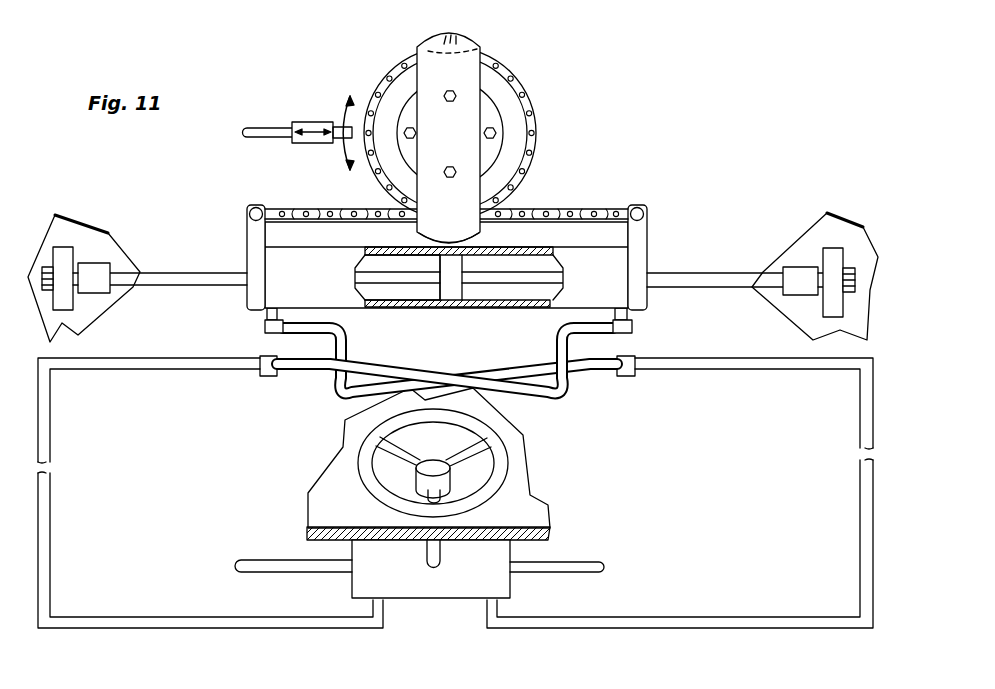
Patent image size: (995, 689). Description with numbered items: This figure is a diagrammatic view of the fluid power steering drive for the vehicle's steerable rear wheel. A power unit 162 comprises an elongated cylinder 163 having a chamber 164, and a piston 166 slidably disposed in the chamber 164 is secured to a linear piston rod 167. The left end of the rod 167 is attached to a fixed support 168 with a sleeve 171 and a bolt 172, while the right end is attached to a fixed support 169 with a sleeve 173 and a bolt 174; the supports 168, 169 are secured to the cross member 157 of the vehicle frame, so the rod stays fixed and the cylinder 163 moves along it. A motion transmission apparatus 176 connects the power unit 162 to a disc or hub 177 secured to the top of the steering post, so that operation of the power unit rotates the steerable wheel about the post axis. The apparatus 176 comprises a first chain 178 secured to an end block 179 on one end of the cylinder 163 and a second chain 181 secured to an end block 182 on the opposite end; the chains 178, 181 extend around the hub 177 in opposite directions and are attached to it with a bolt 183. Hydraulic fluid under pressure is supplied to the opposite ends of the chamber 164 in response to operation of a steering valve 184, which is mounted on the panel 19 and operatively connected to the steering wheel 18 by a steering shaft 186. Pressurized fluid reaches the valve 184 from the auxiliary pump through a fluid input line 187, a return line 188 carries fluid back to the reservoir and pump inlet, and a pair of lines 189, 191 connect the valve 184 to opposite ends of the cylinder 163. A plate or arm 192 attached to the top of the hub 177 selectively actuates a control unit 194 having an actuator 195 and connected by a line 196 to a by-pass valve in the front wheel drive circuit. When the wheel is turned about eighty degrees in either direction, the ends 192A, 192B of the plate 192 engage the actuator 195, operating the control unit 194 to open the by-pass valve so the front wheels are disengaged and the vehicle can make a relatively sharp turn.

The steering wheel 18 is at (500, 462).
The panel 19 is at (522, 505).
The cross member 157 is at (92, 305).
The power unit 162 is at (630, 160).
The cylinder 163 is at (505, 307).
The chamber 164 is at (402, 307).
The piston 166 is at (443, 305).
The piston rod 167 is at (540, 280).
The fixed support 168 is at (65, 252).
The fixed support 169 is at (833, 252).
The sleeve 171 is at (102, 270).
The bolt 172 is at (50, 272).
The sleeve 173 is at (790, 270).
The bolt 174 is at (857, 277).
The motion transmission apparatus 176 is at (538, 188).
The hub 177 is at (513, 117).
The first chain 178 is at (310, 207).
The end block 179 is at (253, 233).
The second chain 181 is at (565, 213).
The end block 182 is at (641, 237).
The bolt 183 is at (428, 42).
The steering valve 184 is at (425, 590).
The steering shaft 186 is at (440, 558).
The fluid input line 187 is at (575, 562).
The return line 188 is at (257, 560).
The line 189 is at (232, 620).
The line 191 is at (640, 627).
The plate 192 is at (468, 66).
The end of plate 192A is at (453, 33).
The end of plate 192B is at (480, 238).
The control unit 194 is at (308, 122).
The actuator 195 is at (338, 144).
The line 196 is at (258, 127).